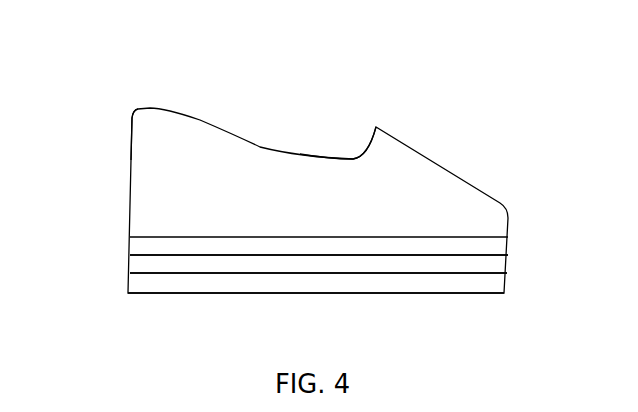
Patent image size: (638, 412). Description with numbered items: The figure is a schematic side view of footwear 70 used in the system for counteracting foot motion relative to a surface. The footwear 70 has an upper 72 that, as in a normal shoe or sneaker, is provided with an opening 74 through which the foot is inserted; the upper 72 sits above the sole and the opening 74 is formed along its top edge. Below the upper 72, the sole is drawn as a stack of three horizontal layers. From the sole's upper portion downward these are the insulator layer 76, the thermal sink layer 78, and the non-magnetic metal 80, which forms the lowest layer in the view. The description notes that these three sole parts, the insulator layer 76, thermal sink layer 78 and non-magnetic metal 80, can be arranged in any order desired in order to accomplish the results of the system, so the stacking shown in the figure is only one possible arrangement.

The footwear 70 is at (103, 72).
The upper 72 is at (146, 163).
The opening 74 is at (345, 143).
The insulator layer 76 is at (510, 243).
The thermal sink layer 78 is at (510, 269).
The non-magnetic metal 80 is at (505, 282).